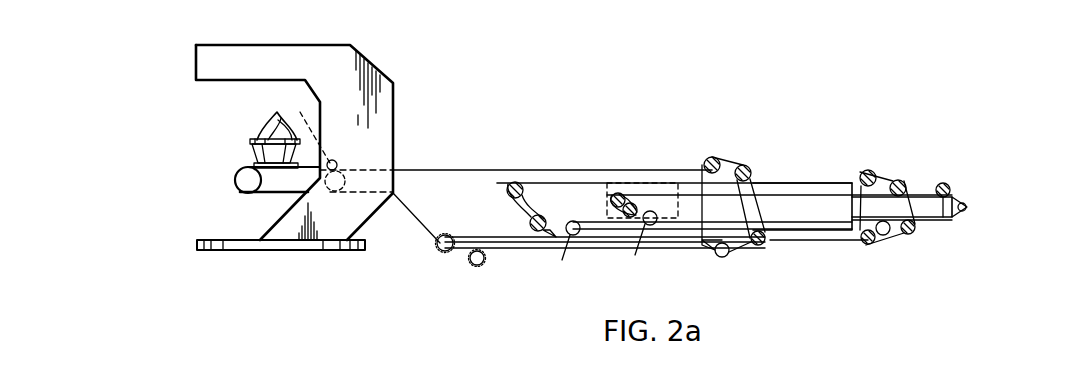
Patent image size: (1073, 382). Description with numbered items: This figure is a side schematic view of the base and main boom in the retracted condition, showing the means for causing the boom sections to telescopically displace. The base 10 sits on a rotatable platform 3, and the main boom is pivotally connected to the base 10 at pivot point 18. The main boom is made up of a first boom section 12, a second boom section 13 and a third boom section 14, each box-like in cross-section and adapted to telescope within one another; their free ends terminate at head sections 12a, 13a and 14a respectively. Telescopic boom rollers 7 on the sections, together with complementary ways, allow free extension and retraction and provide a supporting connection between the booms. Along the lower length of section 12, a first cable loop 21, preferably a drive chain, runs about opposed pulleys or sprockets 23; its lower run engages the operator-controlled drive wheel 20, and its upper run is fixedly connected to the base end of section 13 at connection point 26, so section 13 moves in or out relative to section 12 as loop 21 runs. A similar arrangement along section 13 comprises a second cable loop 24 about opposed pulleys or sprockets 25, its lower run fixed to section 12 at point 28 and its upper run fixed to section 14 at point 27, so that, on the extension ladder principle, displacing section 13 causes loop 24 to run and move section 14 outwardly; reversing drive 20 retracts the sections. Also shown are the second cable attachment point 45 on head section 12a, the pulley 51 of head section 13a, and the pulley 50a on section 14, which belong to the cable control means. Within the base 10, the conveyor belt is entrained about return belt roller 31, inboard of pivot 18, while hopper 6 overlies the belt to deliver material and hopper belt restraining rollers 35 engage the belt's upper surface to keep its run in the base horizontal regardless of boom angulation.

The rotatable platform 3 is at (360, 250).
The hopper 6 is at (262, 132).
The telescopic boom rollers 7 is at (511, 183).
The base 10 is at (393, 128).
The first boom section 12 is at (582, 169).
The head section 12a is at (748, 165).
The second boom section 13 is at (813, 181).
The head section 13a is at (894, 179).
The third boom section 14 is at (928, 197).
The head section 14a is at (945, 220).
The pivot point 18 is at (352, 170).
The drive wheel 20 is at (468, 263).
The first cable loop 21 is at (604, 250).
The pulleys or sprockets 23 is at (437, 248).
The second cable loop 24 is at (811, 240).
The pulleys or sprockets 25 is at (567, 236).
The connection point 26 is at (545, 234).
The connection point 27 is at (650, 226).
The connection point 28 is at (702, 244).
The return belt roller 31 is at (238, 174).
The hopper belt restraining rollers 35 is at (300, 128).
The cable attachment point 45 is at (706, 162).
The pulley 50a is at (950, 190).
The pulley 51 is at (862, 172).